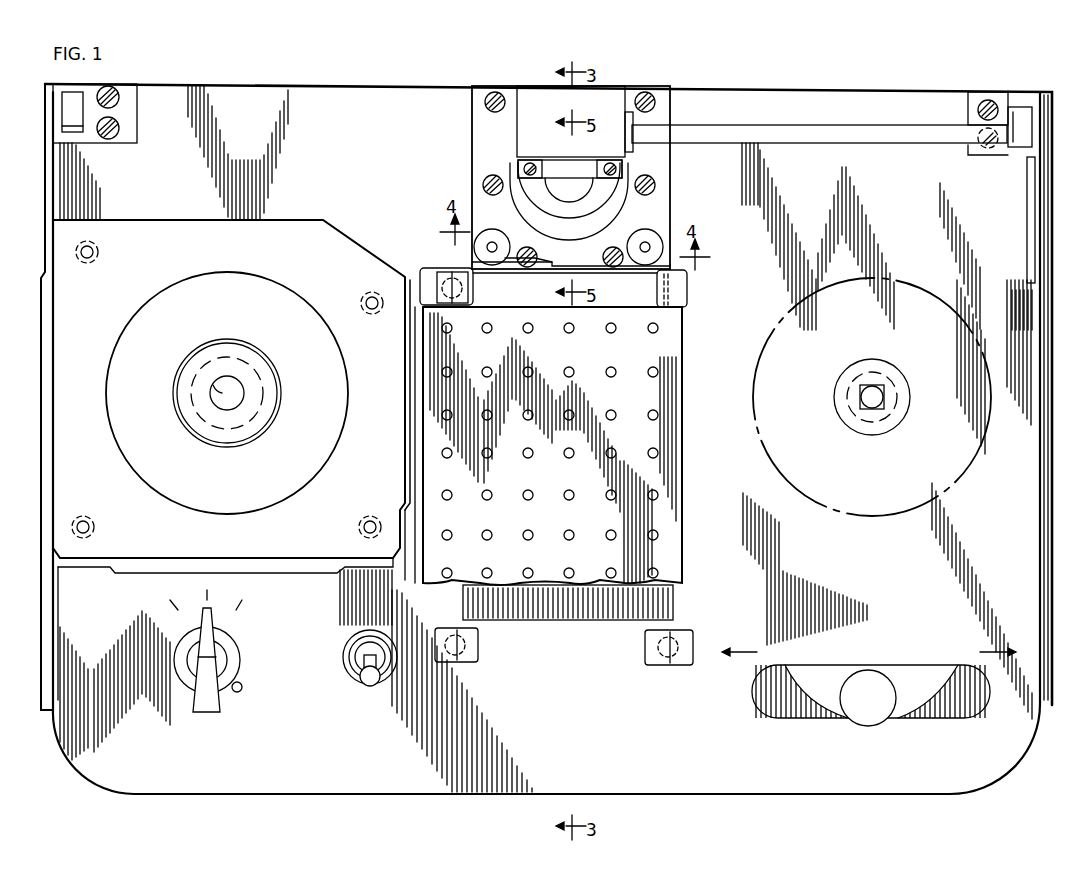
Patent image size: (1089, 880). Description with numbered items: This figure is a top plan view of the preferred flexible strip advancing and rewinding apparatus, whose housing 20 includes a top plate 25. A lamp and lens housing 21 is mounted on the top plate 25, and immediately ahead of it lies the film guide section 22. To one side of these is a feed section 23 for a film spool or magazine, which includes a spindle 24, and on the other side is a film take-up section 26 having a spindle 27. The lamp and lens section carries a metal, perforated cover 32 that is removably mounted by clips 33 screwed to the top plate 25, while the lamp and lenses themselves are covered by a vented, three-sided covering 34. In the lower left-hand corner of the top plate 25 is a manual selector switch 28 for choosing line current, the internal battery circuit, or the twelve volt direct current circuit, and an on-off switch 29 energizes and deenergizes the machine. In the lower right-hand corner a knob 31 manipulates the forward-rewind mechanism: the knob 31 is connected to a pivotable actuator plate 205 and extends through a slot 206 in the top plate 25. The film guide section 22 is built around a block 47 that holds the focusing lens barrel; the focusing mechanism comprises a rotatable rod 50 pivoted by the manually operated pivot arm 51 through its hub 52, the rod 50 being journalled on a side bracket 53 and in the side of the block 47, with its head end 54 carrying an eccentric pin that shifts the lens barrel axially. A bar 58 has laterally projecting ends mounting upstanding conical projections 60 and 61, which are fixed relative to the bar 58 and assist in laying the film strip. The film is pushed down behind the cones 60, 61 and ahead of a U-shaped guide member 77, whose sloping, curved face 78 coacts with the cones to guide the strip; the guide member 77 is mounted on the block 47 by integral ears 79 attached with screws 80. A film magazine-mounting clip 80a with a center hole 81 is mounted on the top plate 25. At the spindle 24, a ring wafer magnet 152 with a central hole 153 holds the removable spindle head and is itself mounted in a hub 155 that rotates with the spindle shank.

The housing 20 is at (1025, 486).
The lamp and lens housing 21 is at (452, 587).
The film guide section 22 is at (488, 153).
The feed section 23 is at (145, 432).
The spindle 24 is at (236, 393).
The top plate 25 is at (886, 236).
The film take-up section 26 is at (800, 471).
The spindle 27 is at (886, 398).
The selector switch 28 is at (196, 702).
The on-off switch 29 is at (360, 673).
The knob 31 is at (860, 716).
The perforated cover 32 is at (662, 437).
The clip 33 is at (445, 275).
The vented three-sided covering 34 is at (543, 612).
The block 47 is at (539, 95).
The rotatable rod 50 is at (800, 128).
The pivot arm 51 is at (1026, 200).
The hub 52 is at (1005, 157).
The side bracket 53 is at (1036, 132).
The head end 54 is at (636, 148).
The bar 58 is at (541, 258).
The conical projection 60 is at (500, 247).
The conical projection 61 is at (650, 244).
The U-shaped guide member 77 is at (522, 200).
The sloping curved face 78 is at (604, 223).
The ears 79 is at (597, 168).
The screws 80 is at (528, 162).
The film magazine-mounting clip 80a is at (231, 389).
The center hole 81 is at (130, 340).
The wafer magnet 152 is at (250, 365).
The central hole 153 is at (213, 388).
The hub 155 is at (216, 445).
The actuator plate 205 is at (905, 704).
The slot 206 is at (782, 716).